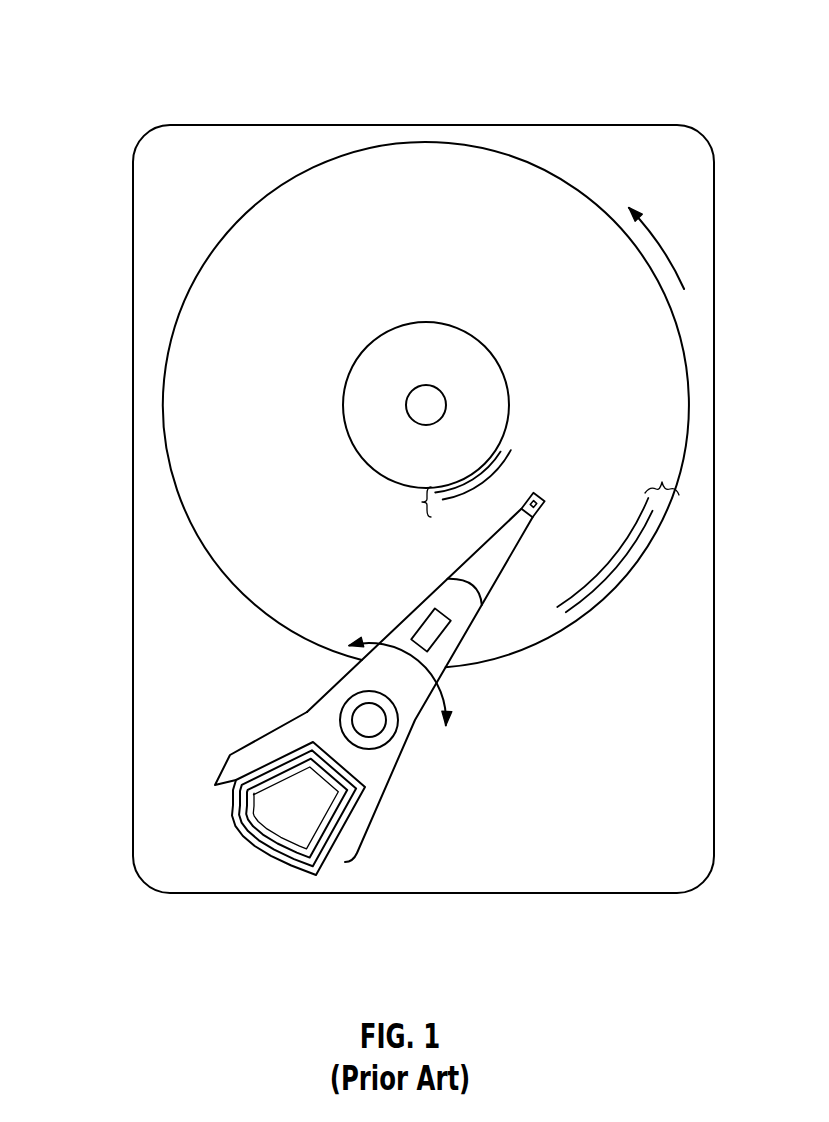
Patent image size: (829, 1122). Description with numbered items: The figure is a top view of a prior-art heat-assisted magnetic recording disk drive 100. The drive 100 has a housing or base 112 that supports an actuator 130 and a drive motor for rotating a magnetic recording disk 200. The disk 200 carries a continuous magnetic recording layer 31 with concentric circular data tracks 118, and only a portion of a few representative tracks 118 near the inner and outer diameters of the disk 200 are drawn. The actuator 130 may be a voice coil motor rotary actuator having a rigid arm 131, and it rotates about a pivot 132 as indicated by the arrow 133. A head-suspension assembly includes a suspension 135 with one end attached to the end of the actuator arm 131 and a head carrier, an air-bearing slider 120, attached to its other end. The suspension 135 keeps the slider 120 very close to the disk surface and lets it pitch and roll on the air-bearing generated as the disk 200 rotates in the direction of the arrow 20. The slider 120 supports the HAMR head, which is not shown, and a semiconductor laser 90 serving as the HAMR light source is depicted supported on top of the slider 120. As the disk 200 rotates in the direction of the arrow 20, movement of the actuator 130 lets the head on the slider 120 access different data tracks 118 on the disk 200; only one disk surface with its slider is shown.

The HAMR disk drive 100 is at (133, 47).
The housing or base 112 is at (640, 125).
The disk 200 is at (283, 183).
The continuous magnetic recording layer 31 is at (665, 370).
The arrow 20 is at (657, 227).
The data tracks 118 is at (422, 502).
The semiconductor laser 90 is at (548, 500).
The air-bearing slider 120 is at (543, 514).
The suspension 135 is at (466, 572).
The rigid arm 131 is at (410, 622).
The arrow 133 is at (443, 700).
The pivot 132 is at (360, 712).
The actuator 130 is at (220, 770).